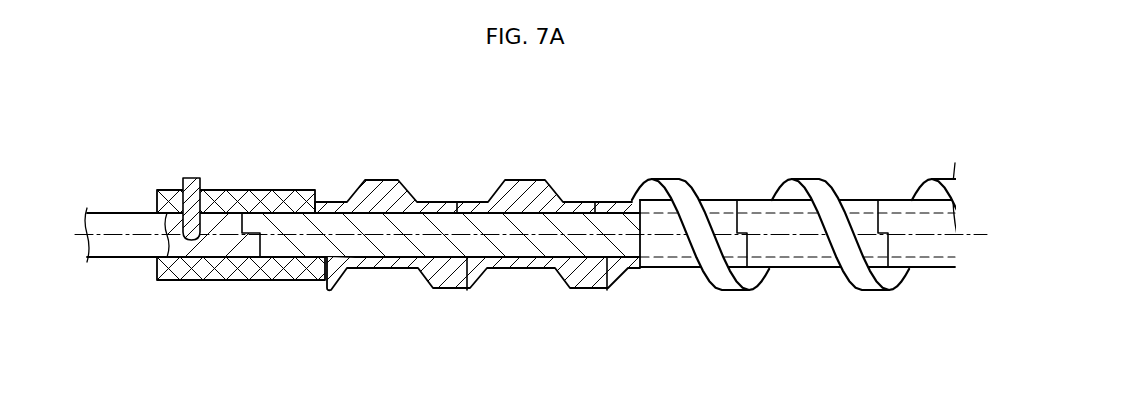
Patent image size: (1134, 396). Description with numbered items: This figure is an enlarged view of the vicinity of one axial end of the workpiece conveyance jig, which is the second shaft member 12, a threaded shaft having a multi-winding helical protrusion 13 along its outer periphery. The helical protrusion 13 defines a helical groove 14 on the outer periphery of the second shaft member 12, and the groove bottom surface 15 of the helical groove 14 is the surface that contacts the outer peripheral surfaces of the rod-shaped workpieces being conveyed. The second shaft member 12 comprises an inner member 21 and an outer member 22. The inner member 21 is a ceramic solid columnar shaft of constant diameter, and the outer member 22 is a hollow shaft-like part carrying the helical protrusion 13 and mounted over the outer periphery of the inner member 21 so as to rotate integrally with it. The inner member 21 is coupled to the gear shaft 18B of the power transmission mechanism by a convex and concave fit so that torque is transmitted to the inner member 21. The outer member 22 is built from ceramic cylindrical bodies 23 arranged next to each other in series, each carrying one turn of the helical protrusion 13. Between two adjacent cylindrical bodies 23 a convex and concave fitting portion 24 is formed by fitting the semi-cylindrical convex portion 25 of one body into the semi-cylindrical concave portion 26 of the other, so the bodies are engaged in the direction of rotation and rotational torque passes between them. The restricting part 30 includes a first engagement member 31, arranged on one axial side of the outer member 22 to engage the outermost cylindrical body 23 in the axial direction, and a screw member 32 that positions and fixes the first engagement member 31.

The second shaft member 12 is at (803, 216).
The helical protrusion 13 is at (806, 172).
The helical groove 14 is at (675, 273).
The groove bottom surface 15 is at (820, 270).
The gear shaft 18B is at (120, 222).
The inner member 21 is at (513, 248).
The outer member 22 is at (687, 166).
The cylindrical body 23 is at (424, 193).
The convex and concave fitting portion 24 is at (599, 208).
The convex portion 25 is at (738, 205).
The concave portion 26 is at (739, 222).
The restricting part 30 is at (237, 184).
The first engagement member 31 is at (261, 188).
The screw member 32 is at (188, 182).